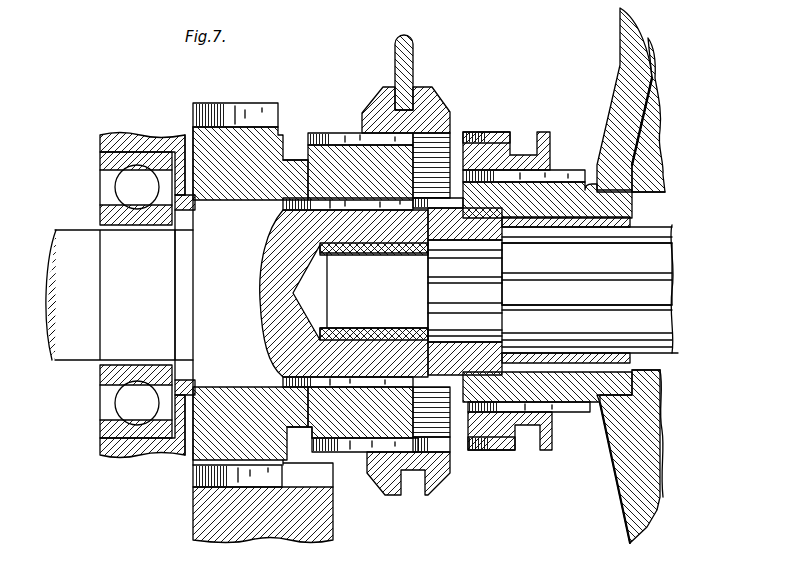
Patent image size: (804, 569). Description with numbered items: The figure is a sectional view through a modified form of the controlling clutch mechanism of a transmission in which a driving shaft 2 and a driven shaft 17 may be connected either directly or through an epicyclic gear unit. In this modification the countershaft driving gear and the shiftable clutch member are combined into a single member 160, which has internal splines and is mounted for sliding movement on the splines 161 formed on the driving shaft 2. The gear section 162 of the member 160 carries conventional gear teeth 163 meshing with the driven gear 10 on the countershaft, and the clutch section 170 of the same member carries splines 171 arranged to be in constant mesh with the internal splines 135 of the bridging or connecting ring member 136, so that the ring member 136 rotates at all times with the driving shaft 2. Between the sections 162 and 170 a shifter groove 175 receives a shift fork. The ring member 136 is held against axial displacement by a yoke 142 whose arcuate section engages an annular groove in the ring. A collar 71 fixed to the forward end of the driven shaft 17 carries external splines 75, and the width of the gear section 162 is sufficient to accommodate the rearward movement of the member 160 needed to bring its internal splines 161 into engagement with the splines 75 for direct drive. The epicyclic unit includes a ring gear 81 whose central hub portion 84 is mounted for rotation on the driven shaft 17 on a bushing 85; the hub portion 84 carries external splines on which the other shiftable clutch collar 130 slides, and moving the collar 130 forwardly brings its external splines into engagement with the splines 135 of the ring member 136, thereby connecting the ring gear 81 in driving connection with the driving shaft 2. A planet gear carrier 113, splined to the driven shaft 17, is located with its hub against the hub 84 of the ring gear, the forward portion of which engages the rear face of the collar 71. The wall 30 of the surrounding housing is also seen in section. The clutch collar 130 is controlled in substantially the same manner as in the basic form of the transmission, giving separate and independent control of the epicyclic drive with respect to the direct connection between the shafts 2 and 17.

The driving shaft 2 is at (56, 246).
The driven gear 10 is at (205, 507).
The driven shaft 17 is at (668, 258).
The housing wall 30 is at (612, 84).
The collar 71 is at (504, 340).
The external splines 75 is at (447, 208).
The ring gear 81 is at (642, 52).
The hub portion 84 is at (563, 180).
The bushing 85 is at (585, 223).
The planet gear carrier 113 is at (655, 189).
The shiftable clutch collar 130 is at (495, 145).
The internal splines 135 is at (448, 140).
The connecting ring member 136 is at (433, 92).
The yoke 142 is at (396, 52).
The combined gear and clutch member 160 is at (185, 137).
The splines 161 is at (350, 205).
The gear section 162 is at (247, 130).
The gear teeth 163 is at (216, 112).
The clutch section 170 is at (328, 150).
The splines 171 is at (353, 138).
The shifter groove 175 is at (322, 446).